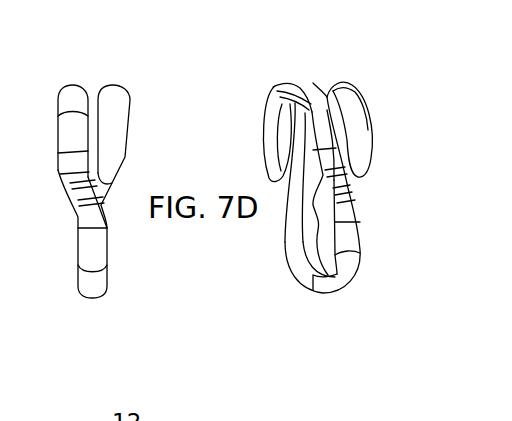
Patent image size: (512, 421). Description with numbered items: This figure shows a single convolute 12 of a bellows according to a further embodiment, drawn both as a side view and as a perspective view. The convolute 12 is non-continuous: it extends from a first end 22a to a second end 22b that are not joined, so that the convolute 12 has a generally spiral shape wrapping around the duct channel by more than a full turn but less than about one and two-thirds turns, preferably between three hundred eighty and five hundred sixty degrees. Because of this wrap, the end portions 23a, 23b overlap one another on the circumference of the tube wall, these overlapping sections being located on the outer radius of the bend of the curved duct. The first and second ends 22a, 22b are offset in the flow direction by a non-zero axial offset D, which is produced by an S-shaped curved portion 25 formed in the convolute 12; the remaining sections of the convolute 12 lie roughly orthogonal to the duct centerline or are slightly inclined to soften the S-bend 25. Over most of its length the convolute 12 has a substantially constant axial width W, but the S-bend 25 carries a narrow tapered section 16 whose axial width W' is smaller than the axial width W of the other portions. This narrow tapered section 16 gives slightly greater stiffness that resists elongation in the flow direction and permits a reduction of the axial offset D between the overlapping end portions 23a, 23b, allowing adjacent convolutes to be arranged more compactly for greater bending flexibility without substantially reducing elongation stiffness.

The convolute 12 is at (339, 312).
The narrow tapered section 16 is at (335, 190).
The first end 22a is at (270, 168).
The second end 22b is at (368, 158).
The end portion 23a is at (273, 87).
The end portion 23b is at (350, 84).
The S-shaped curved portion 25 is at (357, 183).
The axial offset D is at (116, 100).
The axial width W is at (92, 329).
The axial width of the narrow tapered section W' is at (146, 278).